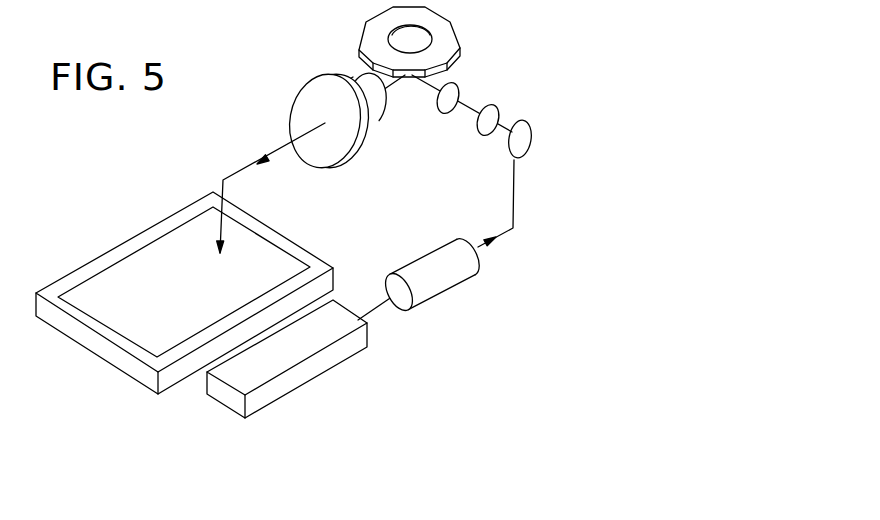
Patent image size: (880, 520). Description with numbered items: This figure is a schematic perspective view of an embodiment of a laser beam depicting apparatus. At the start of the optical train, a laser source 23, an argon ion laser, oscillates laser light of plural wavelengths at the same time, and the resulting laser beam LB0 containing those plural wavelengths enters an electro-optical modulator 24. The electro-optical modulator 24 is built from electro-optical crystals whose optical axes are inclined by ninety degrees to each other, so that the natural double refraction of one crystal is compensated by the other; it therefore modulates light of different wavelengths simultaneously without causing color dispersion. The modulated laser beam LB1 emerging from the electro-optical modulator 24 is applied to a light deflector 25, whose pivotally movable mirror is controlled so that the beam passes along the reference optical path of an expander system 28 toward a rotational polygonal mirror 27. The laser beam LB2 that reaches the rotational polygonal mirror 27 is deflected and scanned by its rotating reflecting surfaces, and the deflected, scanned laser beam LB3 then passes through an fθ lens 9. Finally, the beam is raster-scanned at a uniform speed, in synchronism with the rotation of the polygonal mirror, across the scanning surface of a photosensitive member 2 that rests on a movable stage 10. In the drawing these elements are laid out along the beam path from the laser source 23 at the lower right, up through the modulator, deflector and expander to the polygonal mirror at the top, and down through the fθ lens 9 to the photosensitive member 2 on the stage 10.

The photosensitive member 2 is at (93, 283).
The movable stage 10 is at (92, 347).
The laser source 23 is at (350, 348).
The electro-optical modulator 24 is at (457, 272).
The light deflector 25 is at (532, 133).
The rotational polygonal mirror 27 is at (457, 37).
The expander system 28 is at (491, 153).
The fθ lens 9 is at (305, 80).
The laser beam LB0 is at (378, 307).
The laser beam LB1 is at (513, 230).
The laser beam LB2 is at (505, 120).
The laser beam LB3 is at (243, 168).